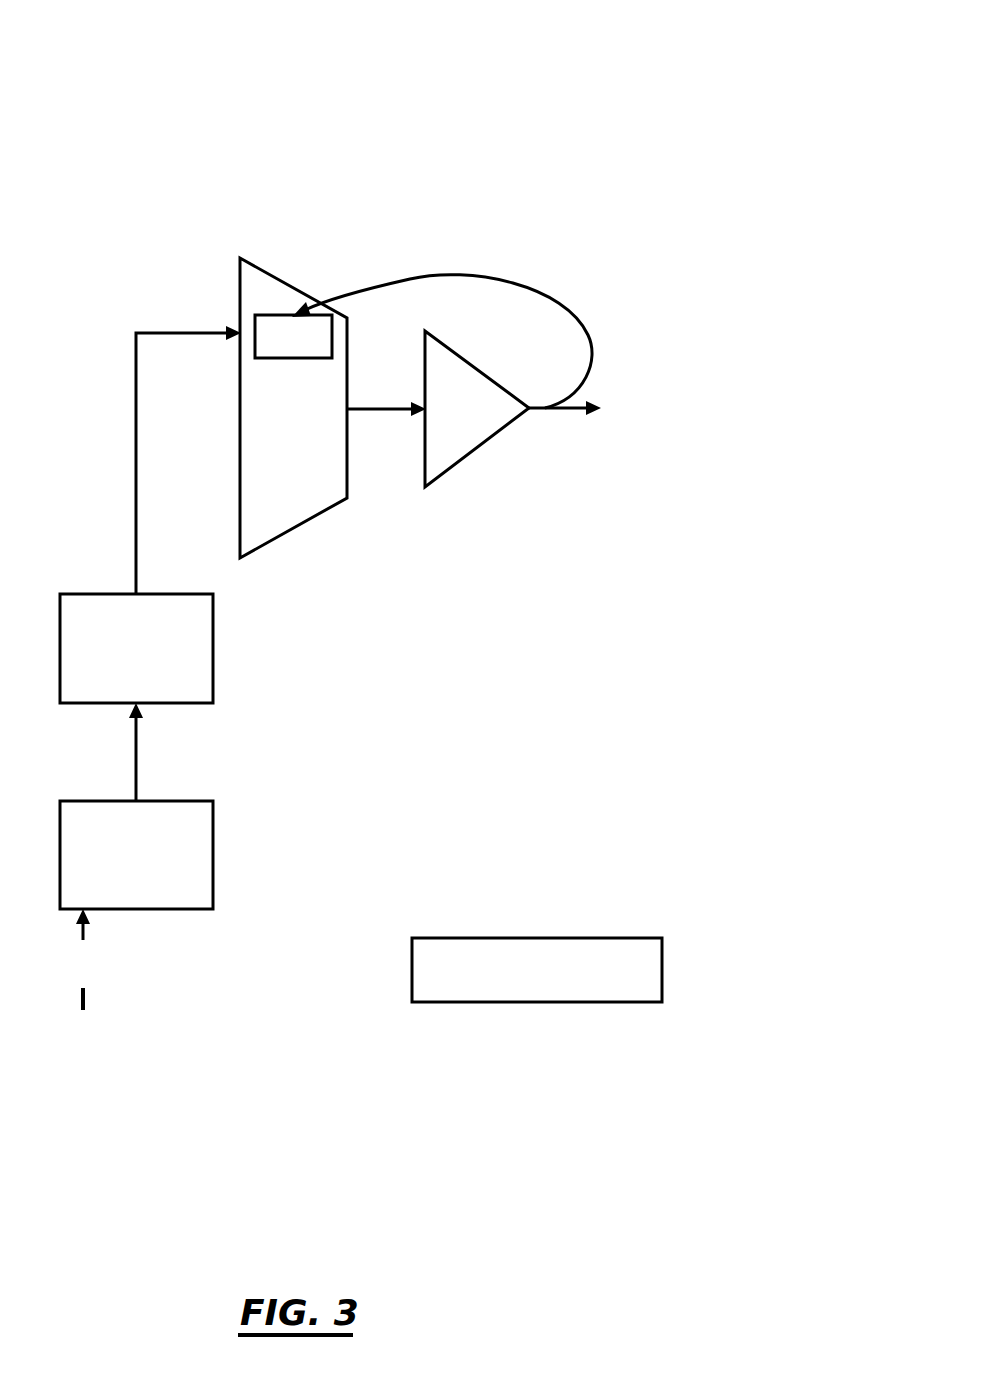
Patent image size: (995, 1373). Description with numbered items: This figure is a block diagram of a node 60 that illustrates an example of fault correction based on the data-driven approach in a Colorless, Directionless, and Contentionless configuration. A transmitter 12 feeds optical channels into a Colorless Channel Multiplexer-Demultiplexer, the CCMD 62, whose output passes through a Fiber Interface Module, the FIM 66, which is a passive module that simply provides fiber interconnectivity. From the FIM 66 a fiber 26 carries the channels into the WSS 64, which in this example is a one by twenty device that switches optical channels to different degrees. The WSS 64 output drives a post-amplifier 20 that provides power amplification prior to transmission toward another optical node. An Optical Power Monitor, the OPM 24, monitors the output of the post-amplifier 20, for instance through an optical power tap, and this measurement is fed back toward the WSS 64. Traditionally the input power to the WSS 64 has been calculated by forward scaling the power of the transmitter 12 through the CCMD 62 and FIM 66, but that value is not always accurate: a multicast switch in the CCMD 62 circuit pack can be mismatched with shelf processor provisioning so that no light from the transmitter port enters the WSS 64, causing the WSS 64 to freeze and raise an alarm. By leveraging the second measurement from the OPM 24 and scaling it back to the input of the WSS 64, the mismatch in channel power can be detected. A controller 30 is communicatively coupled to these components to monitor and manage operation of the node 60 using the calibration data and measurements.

The node 60 is at (592, 56).
The WSS 64 is at (265, 272).
The Optical Power Monitor 24 is at (255, 348).
The amplifier-WSS fiber 26 is at (136, 391).
The post-amplifier 20 is at (425, 474).
The Fiber Interface Module 66 is at (213, 657).
The Colorless Channel Multiplexer-Demultiplexer 62 is at (213, 857).
The transmitter 12 is at (110, 990).
The controller 30 is at (662, 970).